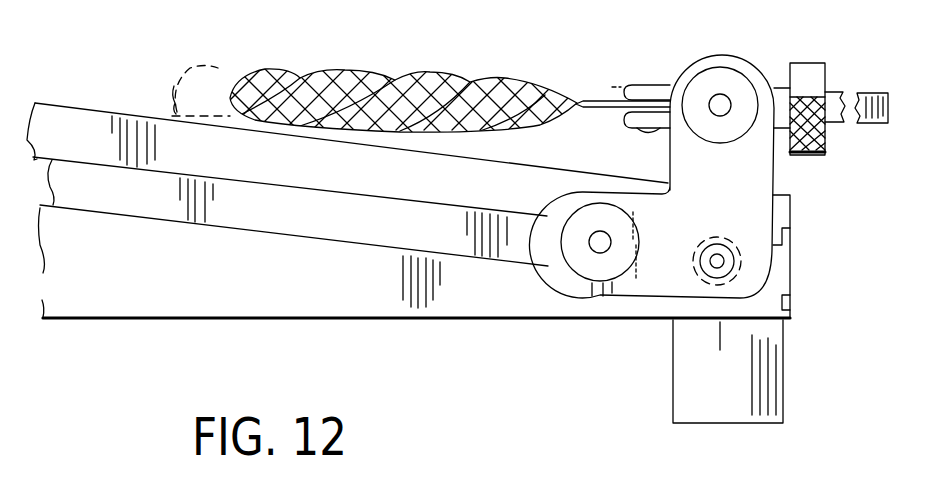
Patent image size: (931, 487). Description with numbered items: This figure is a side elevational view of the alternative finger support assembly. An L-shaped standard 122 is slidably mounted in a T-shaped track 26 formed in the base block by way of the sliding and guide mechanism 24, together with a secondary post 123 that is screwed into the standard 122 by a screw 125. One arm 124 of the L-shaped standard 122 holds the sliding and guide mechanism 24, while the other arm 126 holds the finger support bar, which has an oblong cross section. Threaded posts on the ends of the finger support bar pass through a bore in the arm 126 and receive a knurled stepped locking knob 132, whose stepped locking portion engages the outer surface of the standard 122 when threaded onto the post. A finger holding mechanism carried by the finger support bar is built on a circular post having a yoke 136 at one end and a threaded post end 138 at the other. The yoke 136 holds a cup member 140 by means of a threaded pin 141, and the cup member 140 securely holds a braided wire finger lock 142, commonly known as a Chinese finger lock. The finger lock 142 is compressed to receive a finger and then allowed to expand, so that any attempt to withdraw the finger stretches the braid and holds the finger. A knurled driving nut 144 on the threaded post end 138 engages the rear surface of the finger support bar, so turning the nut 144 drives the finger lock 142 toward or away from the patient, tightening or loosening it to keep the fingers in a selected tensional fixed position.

The braided wire finger lock 142 is at (397, 74).
The cup member 140 is at (598, 99).
The yoke 136 is at (626, 84).
The threaded pin 141 is at (656, 85).
The arm 126 is at (741, 98).
The knurled stepped locking knob 132 is at (752, 98).
The knurled driving nut 144 is at (812, 156).
The threaded post end 138 is at (873, 124).
The L-shaped standard 122 is at (697, 237).
The secondary post 123 is at (740, 258).
The screw 125 is at (733, 272).
The arm 124 is at (572, 281).
The slidable locking mechanism 24 is at (603, 270).
The track 26 is at (463, 250).